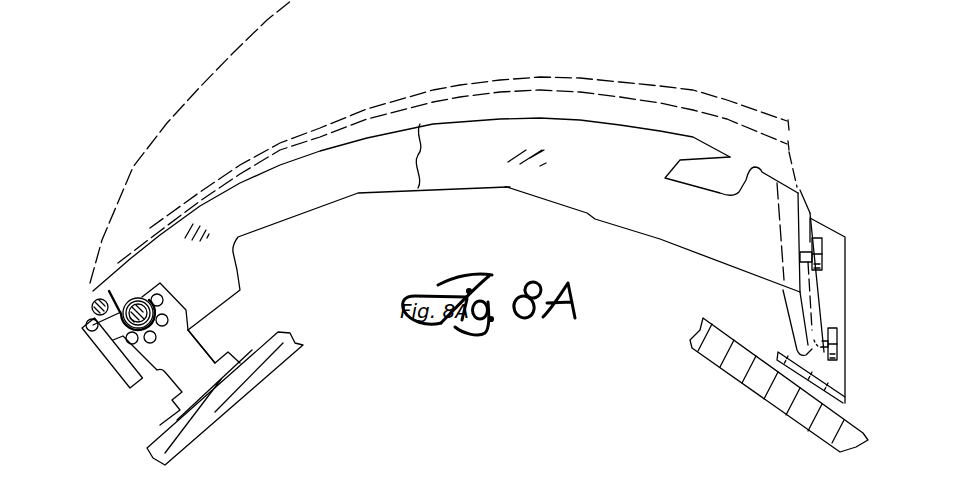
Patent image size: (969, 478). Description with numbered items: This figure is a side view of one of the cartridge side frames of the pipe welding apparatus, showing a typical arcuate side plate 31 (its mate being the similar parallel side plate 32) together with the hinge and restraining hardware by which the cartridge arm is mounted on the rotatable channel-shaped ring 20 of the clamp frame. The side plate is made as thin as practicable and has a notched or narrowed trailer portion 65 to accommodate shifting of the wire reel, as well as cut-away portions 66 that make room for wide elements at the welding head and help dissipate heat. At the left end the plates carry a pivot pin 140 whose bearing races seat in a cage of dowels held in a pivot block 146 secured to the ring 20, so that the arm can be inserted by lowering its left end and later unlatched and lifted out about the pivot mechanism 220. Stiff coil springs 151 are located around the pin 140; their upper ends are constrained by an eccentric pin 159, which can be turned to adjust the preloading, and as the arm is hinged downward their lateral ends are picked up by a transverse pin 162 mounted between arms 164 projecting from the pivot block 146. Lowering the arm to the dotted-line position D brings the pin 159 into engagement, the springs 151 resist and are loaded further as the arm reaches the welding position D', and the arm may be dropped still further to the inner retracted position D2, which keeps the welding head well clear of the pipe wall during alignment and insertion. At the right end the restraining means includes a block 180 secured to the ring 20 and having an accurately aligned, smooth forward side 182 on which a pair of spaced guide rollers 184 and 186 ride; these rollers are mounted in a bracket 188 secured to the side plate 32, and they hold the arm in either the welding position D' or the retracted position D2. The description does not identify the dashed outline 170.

The shield in raised position 170 is at (203, 79).
The dotted line position D is at (492, 152).
The welding position D' is at (477, 176).
The inner retracted position D2 is at (800, 192).
The trailer portion 65 is at (268, 227).
The side plate 31 is at (375, 178).
The side plate 32 is at (540, 187).
The cut away portions 66 is at (695, 183).
The bracket 188 is at (787, 302).
The forward side 182 is at (830, 277).
The block 180 is at (843, 310).
The guide roller 184 is at (820, 247).
The guide roller 186 is at (838, 348).
The coil spring 151 is at (127, 283).
The eccentric pin 159 is at (93, 295).
The transverse shaft or pin 162 is at (83, 322).
The arms 164 is at (113, 388).
The pivot mechanism 220 is at (84, 354).
The pivot pin 140 is at (177, 293).
The pivot block 146 is at (195, 347).
The channel shaped ring 20 is at (253, 372).